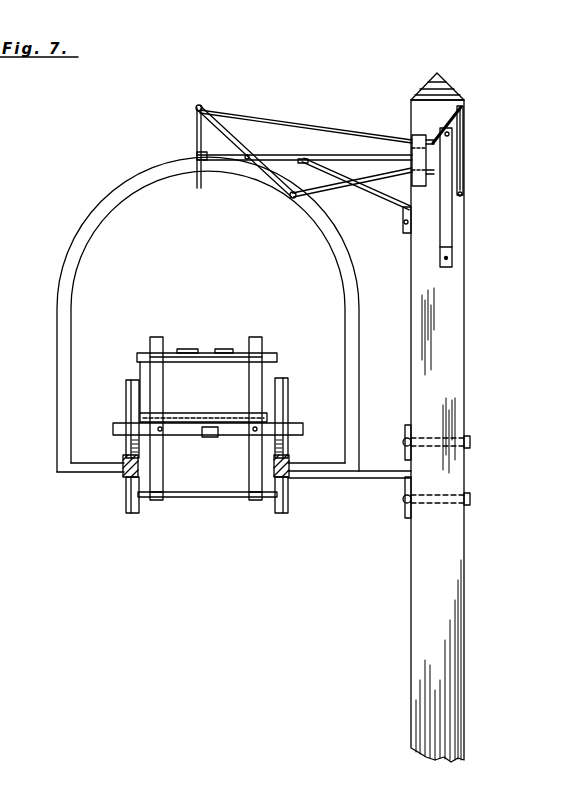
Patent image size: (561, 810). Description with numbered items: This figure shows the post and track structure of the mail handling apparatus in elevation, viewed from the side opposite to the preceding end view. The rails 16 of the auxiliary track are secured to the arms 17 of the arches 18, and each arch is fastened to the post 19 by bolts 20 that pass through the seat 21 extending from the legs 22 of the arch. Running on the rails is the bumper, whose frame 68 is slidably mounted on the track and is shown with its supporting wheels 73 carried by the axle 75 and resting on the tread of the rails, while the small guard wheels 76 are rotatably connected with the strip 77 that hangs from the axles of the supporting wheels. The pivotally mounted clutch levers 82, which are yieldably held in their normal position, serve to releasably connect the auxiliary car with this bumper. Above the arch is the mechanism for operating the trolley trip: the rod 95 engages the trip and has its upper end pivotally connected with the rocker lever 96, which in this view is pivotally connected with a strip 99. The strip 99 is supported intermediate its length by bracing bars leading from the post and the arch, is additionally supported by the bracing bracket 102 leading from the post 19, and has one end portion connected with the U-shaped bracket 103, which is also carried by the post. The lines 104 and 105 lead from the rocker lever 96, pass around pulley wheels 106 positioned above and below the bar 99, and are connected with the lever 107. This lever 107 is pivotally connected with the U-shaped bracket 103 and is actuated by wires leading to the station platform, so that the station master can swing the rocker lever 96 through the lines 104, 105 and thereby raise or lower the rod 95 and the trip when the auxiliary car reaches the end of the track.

The rails 16 is at (127, 483).
The arms 17 is at (108, 472).
The arches 18 is at (70, 258).
The post 19 is at (465, 316).
The bolts 20 is at (470, 494).
The seat 21 is at (406, 441).
The legs 22 is at (375, 465).
The frame 68 is at (293, 428).
The supporting wheels 73 is at (126, 392).
The axle 75 is at (230, 381).
The guard wheels 76 is at (130, 510).
The strip 77 is at (249, 450).
The clutch levers 82 is at (143, 353).
The rod 95 is at (203, 177).
The rocker lever 96 is at (270, 177).
The strip 99 is at (276, 154).
The bracing bracket 102 is at (380, 193).
The U-shaped bracket 103 is at (445, 212).
The line 104 is at (313, 128).
The line 105 is at (352, 178).
The pulley wheels 106 is at (410, 170).
The lever 107 is at (463, 158).